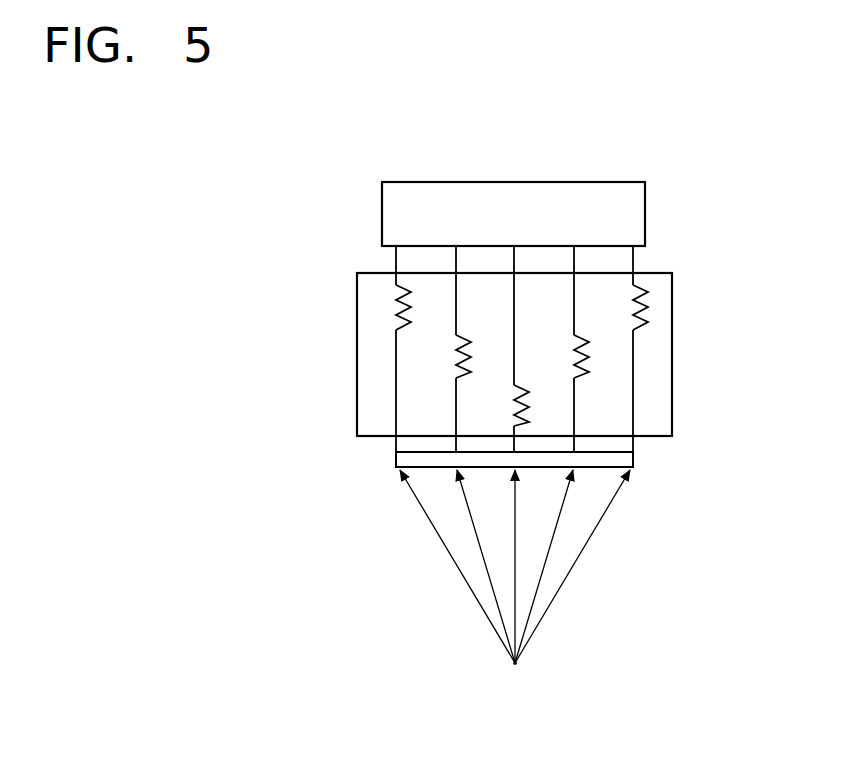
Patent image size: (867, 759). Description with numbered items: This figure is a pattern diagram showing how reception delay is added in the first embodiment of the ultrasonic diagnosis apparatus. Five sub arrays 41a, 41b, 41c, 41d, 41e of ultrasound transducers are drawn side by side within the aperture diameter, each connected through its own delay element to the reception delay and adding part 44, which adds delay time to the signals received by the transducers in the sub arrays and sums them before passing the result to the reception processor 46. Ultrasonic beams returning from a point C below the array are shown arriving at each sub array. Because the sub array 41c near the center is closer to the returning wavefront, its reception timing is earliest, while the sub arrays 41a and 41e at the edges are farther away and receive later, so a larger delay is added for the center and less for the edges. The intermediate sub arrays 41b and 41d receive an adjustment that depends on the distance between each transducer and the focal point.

The reception processor 46 is at (620, 220).
The reception delay and adding part 44 is at (357, 333).
The sub array 41a is at (396, 460).
The sub array 41b is at (450, 460).
The sub array 41c is at (517, 460).
The sub array 41d is at (572, 460).
The sub array 41e is at (633, 463).
The center point C is at (513, 668).